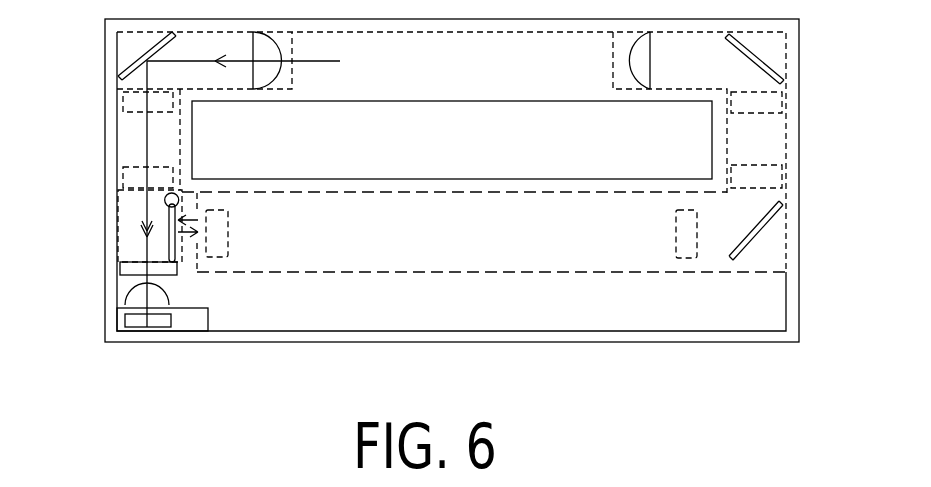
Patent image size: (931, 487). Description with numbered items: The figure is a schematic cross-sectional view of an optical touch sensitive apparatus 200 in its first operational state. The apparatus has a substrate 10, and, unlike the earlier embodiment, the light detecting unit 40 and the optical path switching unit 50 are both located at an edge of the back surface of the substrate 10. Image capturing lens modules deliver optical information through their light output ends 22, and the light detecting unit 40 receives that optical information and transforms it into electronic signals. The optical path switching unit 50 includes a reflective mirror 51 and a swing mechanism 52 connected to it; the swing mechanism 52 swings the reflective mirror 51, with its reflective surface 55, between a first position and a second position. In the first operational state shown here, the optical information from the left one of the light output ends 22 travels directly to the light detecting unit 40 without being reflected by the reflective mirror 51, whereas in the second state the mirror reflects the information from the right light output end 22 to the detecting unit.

The substrate 10 is at (445, 117).
The light output end 22 is at (132, 129).
The light detecting unit 40 is at (120, 320).
The optical path switching unit 50 is at (118, 238).
The reflective mirror 51 is at (170, 234).
The swing mechanism 52 is at (164, 201).
The reflective surface 55 is at (186, 220).
The optical touch sensitive apparatus 200 is at (855, 398).